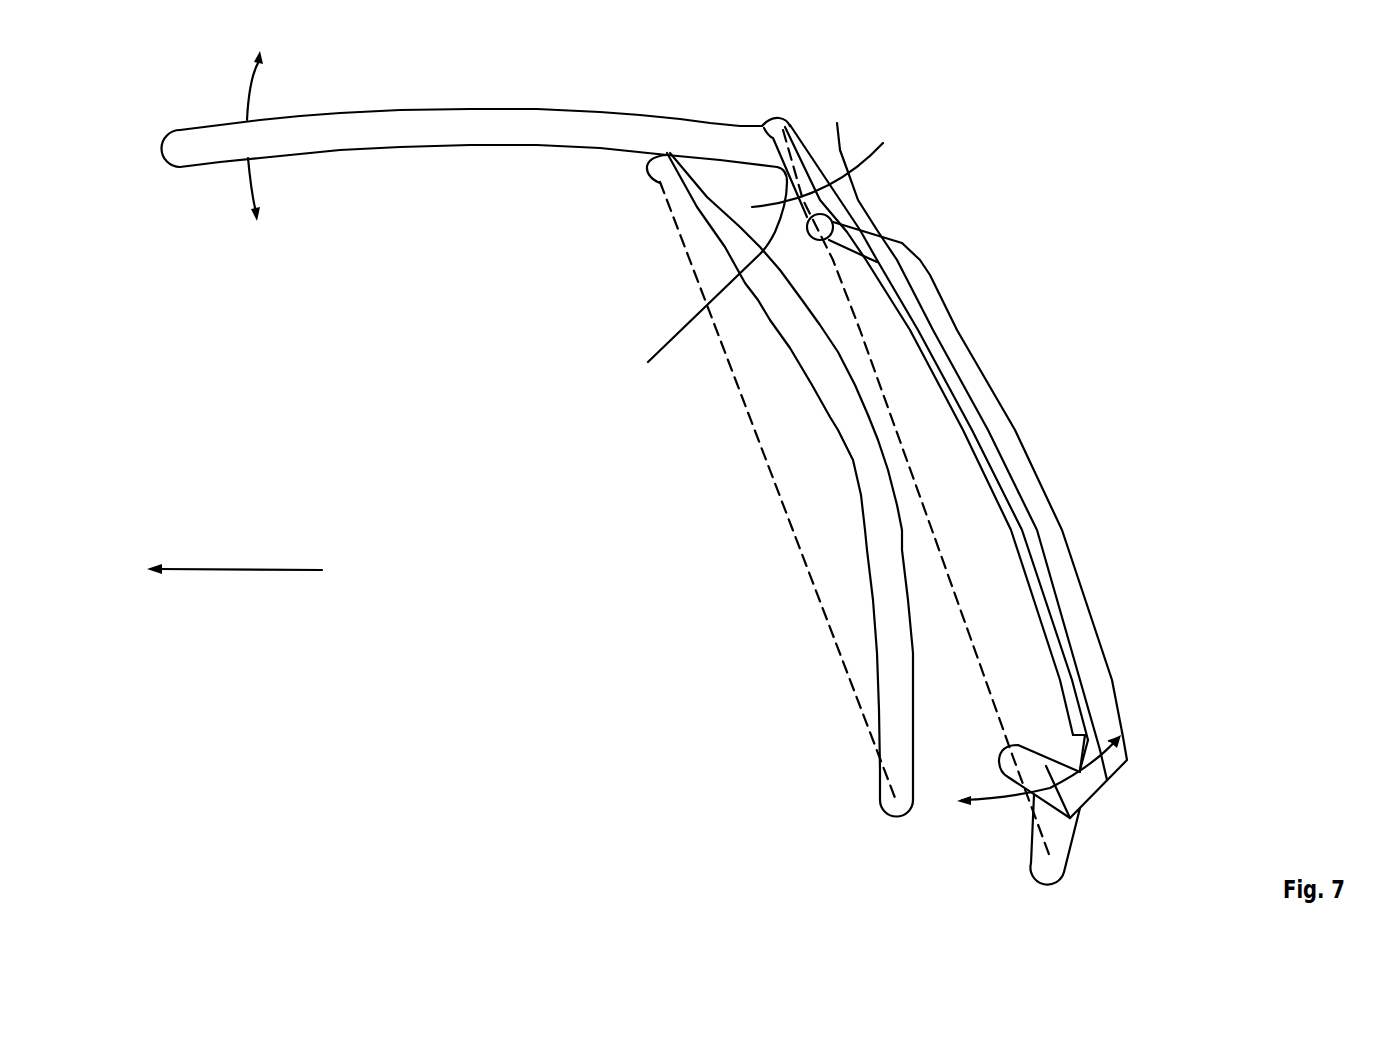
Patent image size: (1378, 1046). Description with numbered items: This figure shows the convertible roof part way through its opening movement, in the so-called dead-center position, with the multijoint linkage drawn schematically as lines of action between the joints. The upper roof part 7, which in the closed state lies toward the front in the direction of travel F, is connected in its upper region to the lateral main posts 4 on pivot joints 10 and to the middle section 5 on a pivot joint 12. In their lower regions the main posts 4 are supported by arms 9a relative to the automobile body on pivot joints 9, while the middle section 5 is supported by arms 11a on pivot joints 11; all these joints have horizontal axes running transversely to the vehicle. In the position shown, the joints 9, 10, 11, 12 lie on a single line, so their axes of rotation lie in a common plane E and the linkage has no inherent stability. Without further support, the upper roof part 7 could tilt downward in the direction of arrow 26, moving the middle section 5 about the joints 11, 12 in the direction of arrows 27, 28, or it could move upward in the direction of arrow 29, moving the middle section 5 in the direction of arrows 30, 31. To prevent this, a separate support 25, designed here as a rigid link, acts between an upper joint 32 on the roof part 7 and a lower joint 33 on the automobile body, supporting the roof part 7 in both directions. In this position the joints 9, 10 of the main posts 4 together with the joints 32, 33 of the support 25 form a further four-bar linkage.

The upper roof part 7 is at (447, 123).
The pivot joint 12 is at (790, 125).
The upper joint 32 is at (667, 155).
The arrow 27 is at (929, 437).
The pivot joint 10 is at (834, 229).
The arrow 30 is at (648, 362).
The support 25 is at (830, 382).
The lower joint 33 is at (893, 817).
The common plane E is at (930, 530).
The main post 4 is at (1020, 637).
The middle section 5 is at (1018, 428).
The arm 11a is at (1045, 767).
The pivot joint 11 is at (1016, 770).
The arrow 31 is at (1013, 800).
The arrow 28 is at (1100, 778).
The pivot joint 9 is at (1050, 863).
The arm 9a is at (1065, 838).
The arrow 29 is at (243, 103).
The arrow 26 is at (247, 183).
The direction of travel F is at (235, 570).